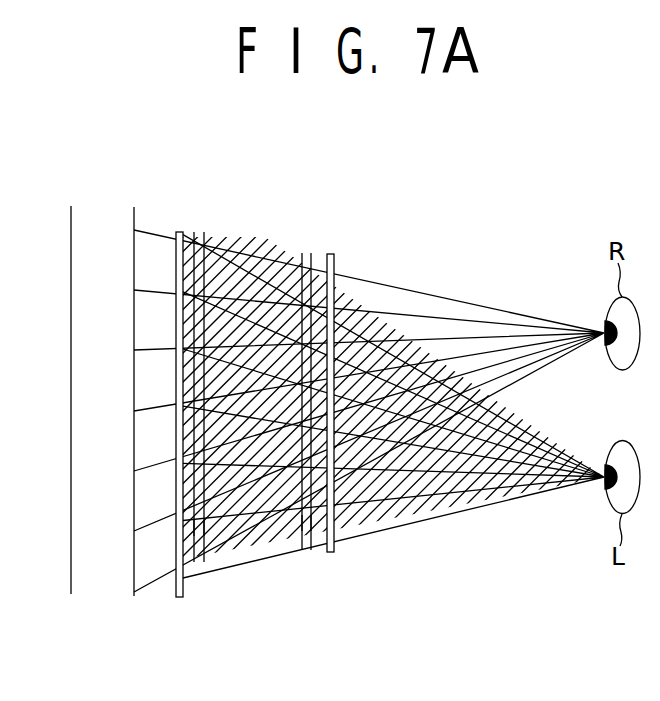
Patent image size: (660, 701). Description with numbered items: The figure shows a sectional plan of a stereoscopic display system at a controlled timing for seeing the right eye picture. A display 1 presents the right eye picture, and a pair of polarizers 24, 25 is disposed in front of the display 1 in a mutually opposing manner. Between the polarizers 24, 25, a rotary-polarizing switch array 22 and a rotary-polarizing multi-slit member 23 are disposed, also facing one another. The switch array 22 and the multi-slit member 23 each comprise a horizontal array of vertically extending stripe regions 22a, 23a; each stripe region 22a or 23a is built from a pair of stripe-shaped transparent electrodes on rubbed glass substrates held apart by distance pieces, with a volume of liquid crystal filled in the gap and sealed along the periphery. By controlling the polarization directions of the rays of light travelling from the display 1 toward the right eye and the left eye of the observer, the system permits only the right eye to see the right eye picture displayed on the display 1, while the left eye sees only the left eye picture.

The display 1 is at (133, 213).
The rotary-polarizing switch array 22 is at (204, 232).
The stripe region 22a is at (201, 530).
The rotary-polarizing multi-slit member 23 is at (312, 254).
The stripe region 23a is at (294, 523).
The polarizer 24 is at (177, 231).
The polarizer 25 is at (337, 256).